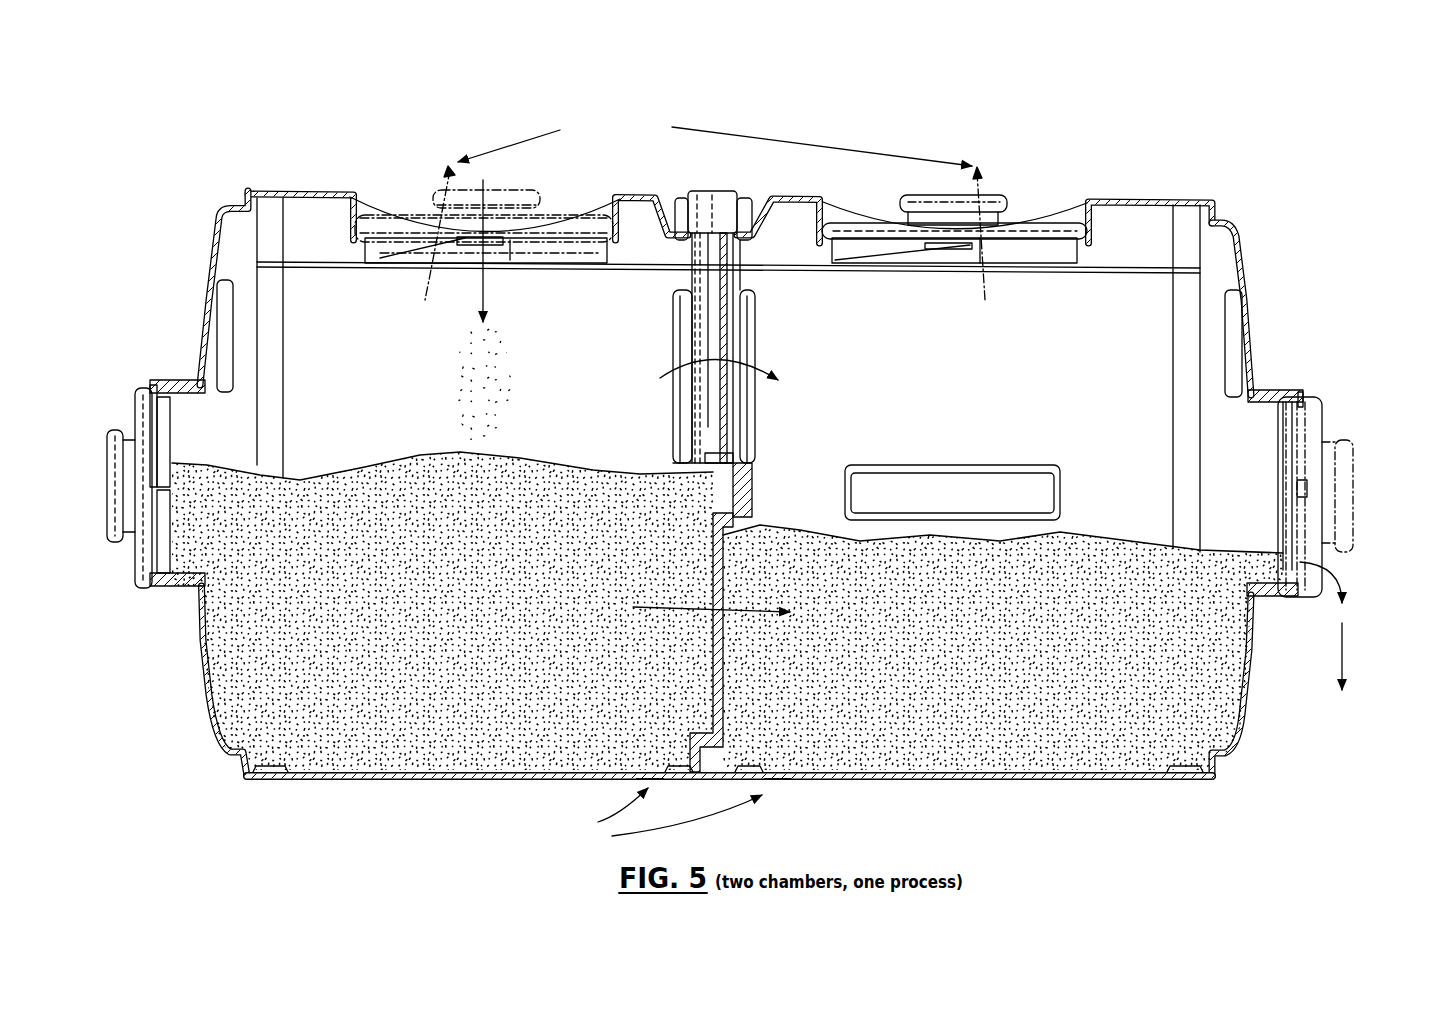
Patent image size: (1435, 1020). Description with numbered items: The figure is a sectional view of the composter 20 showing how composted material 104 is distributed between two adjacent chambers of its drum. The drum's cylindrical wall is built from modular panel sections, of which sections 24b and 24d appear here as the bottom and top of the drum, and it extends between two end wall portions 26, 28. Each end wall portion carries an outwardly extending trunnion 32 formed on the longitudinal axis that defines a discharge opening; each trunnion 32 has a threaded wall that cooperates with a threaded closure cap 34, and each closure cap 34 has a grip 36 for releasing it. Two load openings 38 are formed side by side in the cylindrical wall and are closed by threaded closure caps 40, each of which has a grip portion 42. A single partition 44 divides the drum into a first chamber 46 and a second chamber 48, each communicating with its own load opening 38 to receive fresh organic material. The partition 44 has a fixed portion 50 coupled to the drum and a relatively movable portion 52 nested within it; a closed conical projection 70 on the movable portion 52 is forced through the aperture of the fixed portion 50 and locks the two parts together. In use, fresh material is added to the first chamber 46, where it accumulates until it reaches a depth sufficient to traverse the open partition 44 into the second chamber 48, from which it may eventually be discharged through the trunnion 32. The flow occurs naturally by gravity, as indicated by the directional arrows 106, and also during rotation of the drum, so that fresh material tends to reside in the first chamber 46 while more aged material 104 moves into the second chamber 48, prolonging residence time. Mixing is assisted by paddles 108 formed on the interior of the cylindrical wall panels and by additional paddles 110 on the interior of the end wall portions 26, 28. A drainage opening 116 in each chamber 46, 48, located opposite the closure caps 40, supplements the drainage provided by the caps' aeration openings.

The composter 20 is at (470, 100).
The modular panel section 24b is at (950, 784).
The modular panel section 24d is at (1112, 195).
The end wall portion 26 is at (213, 252).
The end wall portion 28 is at (1256, 300).
The trunnion 32 is at (173, 378).
The closure cap 34 is at (133, 410).
The grip 36 is at (107, 502).
The load opening 38 is at (372, 250).
The closure cap 40 is at (383, 218).
The grip portion 42 is at (518, 192).
The partition 44 is at (742, 286).
The first chamber 46 is at (365, 405).
The second chamber 48 is at (975, 370).
The fixed portion 50 is at (740, 522).
The movable portion 52 is at (705, 458).
The outwardly extending projection 70 is at (753, 495).
The composted material 104 is at (1047, 550).
The directional arrows 106 is at (772, 360).
The paddles 108 is at (962, 470).
The additional paddles 110 is at (233, 400).
The drainage opening 116 is at (655, 785).